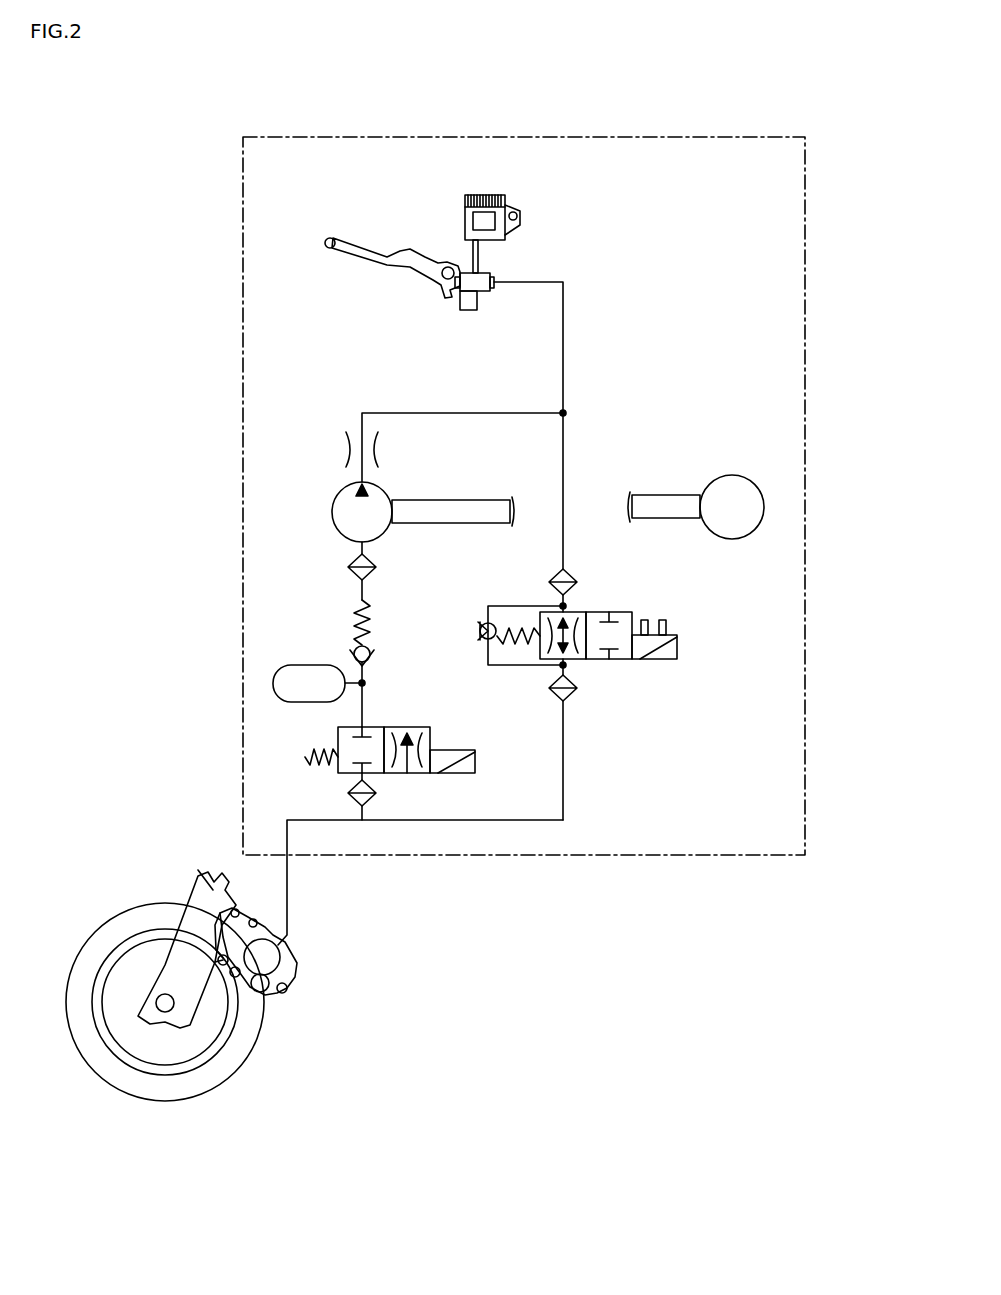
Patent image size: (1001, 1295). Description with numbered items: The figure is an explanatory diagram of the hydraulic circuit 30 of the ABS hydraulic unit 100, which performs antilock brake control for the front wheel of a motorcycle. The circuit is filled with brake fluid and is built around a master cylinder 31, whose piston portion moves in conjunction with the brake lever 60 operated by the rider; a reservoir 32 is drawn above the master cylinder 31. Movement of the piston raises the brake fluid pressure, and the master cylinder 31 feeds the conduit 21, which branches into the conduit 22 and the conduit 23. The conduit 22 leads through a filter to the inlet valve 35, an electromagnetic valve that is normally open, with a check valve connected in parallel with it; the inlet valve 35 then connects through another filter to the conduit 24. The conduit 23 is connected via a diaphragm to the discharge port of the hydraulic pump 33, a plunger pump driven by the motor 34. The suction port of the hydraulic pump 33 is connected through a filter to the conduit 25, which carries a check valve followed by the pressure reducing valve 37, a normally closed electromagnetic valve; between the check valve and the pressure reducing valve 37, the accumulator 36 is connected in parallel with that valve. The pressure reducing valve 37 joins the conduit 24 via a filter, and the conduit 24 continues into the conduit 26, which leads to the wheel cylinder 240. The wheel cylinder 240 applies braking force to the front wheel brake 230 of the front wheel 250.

The ABS hydraulic unit 100 is at (606, 137).
The brake lever 60 is at (368, 250).
The reservoir 32 is at (465, 215).
The master cylinder 31 is at (496, 280).
The conduit 21 is at (566, 335).
The conduit 23 is at (430, 413).
The hydraulic circuit 30 is at (590, 398).
The conduit 22 is at (566, 466).
The motor 34 is at (730, 475).
The hydraulic pump 33 is at (332, 512).
The conduit 25 is at (360, 586).
The inlet valve 35 is at (612, 660).
The accumulator 36 is at (295, 702).
The pressure reducing valve 37 is at (430, 735).
The conduit 24 is at (566, 766).
The conduit 26 is at (290, 840).
The wheel cylinder 240 is at (280, 950).
The front wheel brake 230 is at (284, 975).
The front wheel 250 is at (218, 1075).